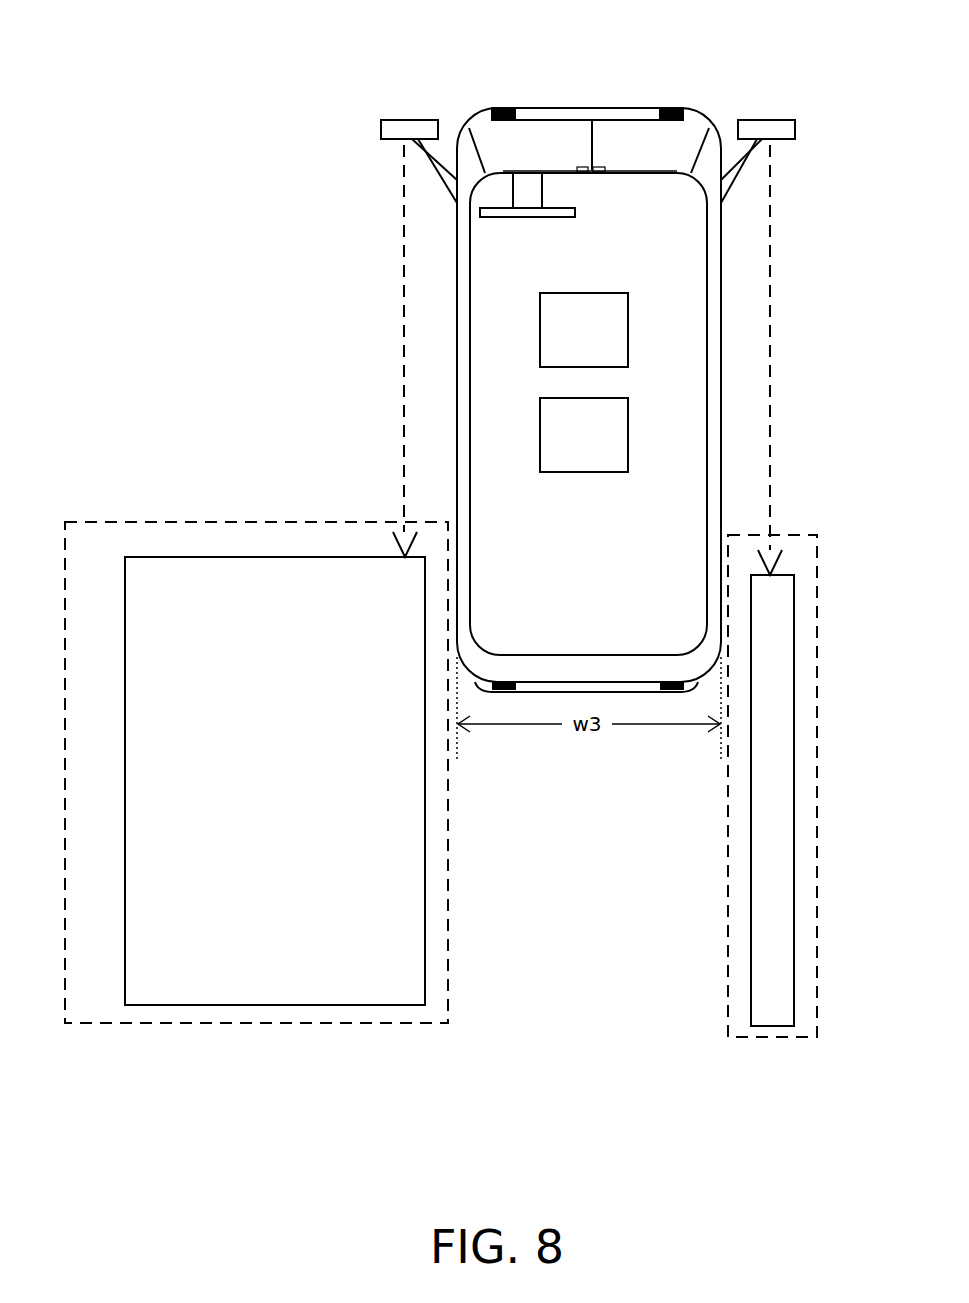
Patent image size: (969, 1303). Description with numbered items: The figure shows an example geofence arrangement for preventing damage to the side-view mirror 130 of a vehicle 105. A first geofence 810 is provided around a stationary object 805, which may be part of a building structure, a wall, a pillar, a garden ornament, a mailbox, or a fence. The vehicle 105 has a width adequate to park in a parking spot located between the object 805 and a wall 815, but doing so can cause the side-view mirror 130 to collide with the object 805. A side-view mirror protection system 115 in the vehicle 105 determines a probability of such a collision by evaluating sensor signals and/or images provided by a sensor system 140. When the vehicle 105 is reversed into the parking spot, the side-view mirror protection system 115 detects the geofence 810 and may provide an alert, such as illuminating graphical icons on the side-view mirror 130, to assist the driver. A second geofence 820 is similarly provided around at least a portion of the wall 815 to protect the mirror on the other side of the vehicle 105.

The vehicle 105 is at (768, 58).
The side-view mirror 130 is at (388, 139).
The side-view mirror protection system 115 is at (584, 330).
The sensor system 140 is at (584, 435).
The object 805 is at (275, 781).
The geofence 810 is at (203, 522).
The wall 815 is at (772, 800).
The geofence 820 is at (728, 842).